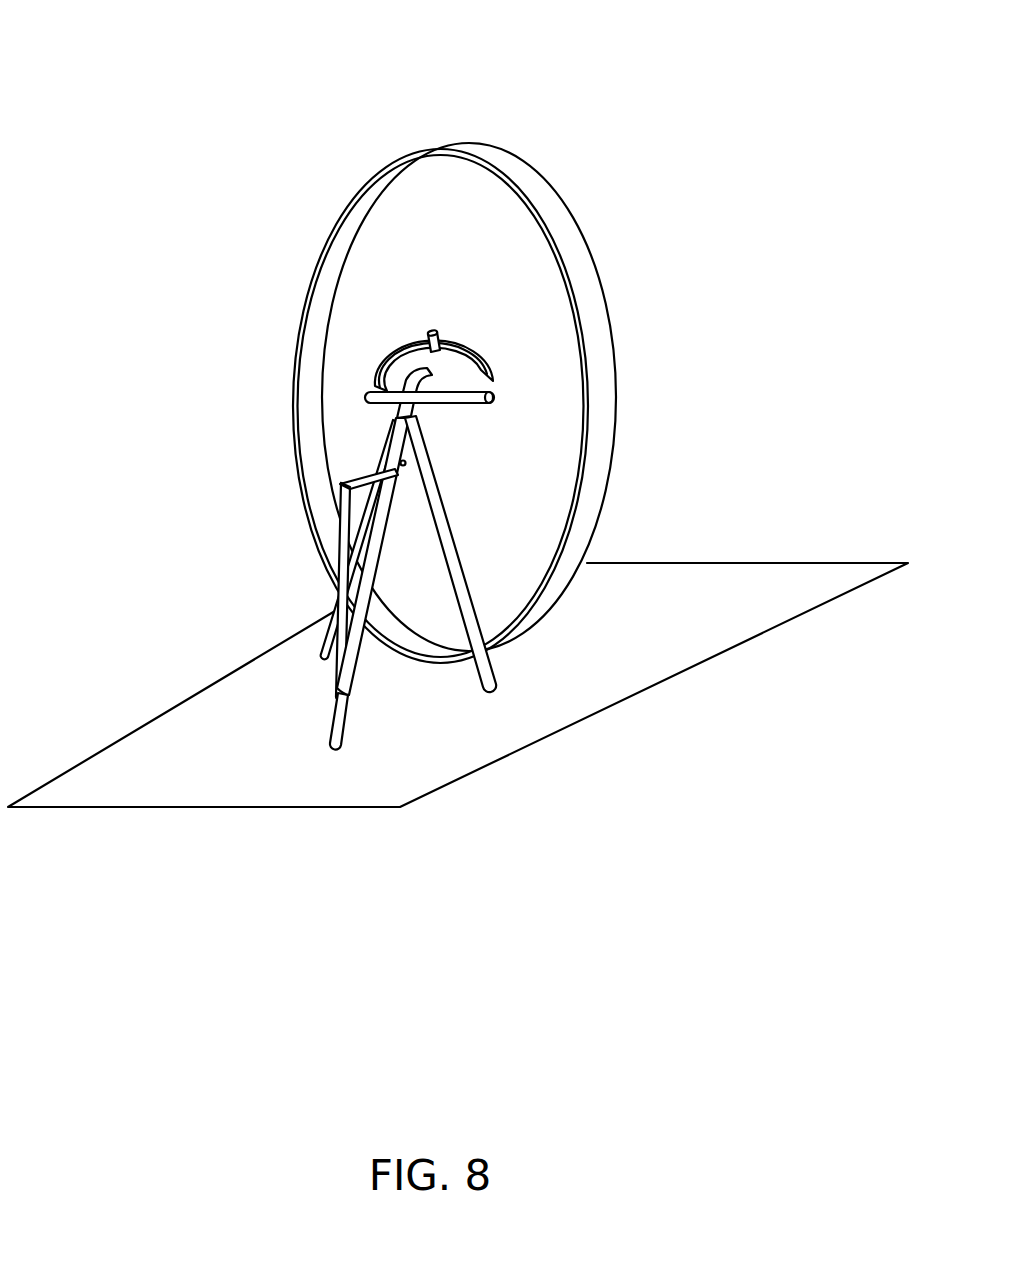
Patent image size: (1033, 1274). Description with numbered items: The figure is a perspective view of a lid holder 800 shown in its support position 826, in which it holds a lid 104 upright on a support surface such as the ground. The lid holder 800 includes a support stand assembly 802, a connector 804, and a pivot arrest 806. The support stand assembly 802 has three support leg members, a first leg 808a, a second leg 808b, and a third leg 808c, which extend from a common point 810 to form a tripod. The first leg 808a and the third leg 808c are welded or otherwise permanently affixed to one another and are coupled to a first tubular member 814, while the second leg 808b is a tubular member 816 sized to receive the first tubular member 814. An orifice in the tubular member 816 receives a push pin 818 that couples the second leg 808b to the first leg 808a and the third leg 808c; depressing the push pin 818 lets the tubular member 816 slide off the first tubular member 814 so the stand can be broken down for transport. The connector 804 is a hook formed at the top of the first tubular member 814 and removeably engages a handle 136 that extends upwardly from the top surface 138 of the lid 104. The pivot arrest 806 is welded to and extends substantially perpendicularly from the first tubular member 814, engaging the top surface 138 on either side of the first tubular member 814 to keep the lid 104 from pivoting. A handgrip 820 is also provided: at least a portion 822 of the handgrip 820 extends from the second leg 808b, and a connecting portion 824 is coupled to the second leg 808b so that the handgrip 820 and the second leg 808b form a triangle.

The lid holder 800 is at (168, 57).
The support position 826 is at (826, 99).
The lid 104 is at (533, 255).
The top surface 138 is at (457, 185).
The support stand assembly 802 is at (252, 540).
The first leg 808a is at (322, 652).
The second leg 808b is at (333, 733).
The third leg 808c is at (492, 678).
The tubular member 816 is at (360, 637).
The connecting portion 824 is at (345, 548).
The handgrip 820 is at (345, 497).
The portion of the handgrip 822 is at (362, 480).
The push pin 818 is at (404, 464).
The common point 810 is at (410, 408).
The pivot arrest 806 is at (441, 398).
The handle 136 is at (485, 378).
The first tubular member 814 is at (378, 389).
The connector 804 is at (428, 334).